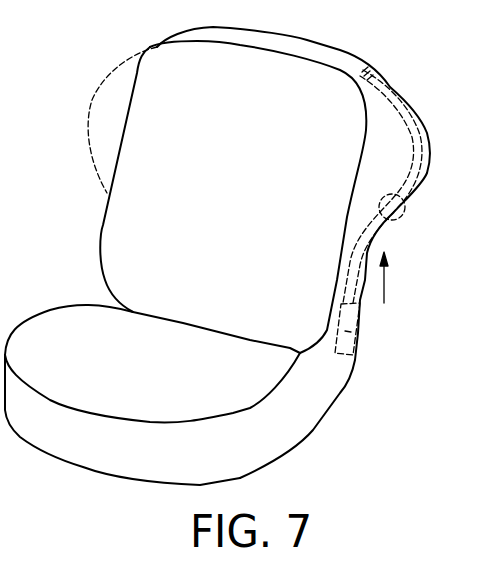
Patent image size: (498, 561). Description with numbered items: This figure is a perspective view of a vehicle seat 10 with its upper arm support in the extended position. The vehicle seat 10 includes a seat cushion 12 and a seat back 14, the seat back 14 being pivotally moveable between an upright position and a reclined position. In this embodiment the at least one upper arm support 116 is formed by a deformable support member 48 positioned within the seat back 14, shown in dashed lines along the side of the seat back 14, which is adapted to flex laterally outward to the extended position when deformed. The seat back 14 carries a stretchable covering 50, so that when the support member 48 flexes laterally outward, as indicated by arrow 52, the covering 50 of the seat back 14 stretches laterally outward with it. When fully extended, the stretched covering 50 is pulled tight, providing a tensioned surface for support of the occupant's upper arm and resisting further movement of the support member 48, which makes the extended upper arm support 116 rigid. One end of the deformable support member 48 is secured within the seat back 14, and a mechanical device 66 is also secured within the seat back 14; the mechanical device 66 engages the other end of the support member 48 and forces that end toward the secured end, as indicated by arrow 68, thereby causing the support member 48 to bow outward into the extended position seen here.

The vehicle seat 10 is at (217, 256).
The seat cushion 12 is at (173, 378).
The seat back 14 is at (257, 150).
The deformable support member 48 is at (394, 228).
The stretchable covering 50 is at (405, 157).
The arrow 52 is at (388, 157).
The mechanical device 66 is at (358, 340).
The arrow 68 is at (383, 285).
The upper arm support 116 is at (410, 107).